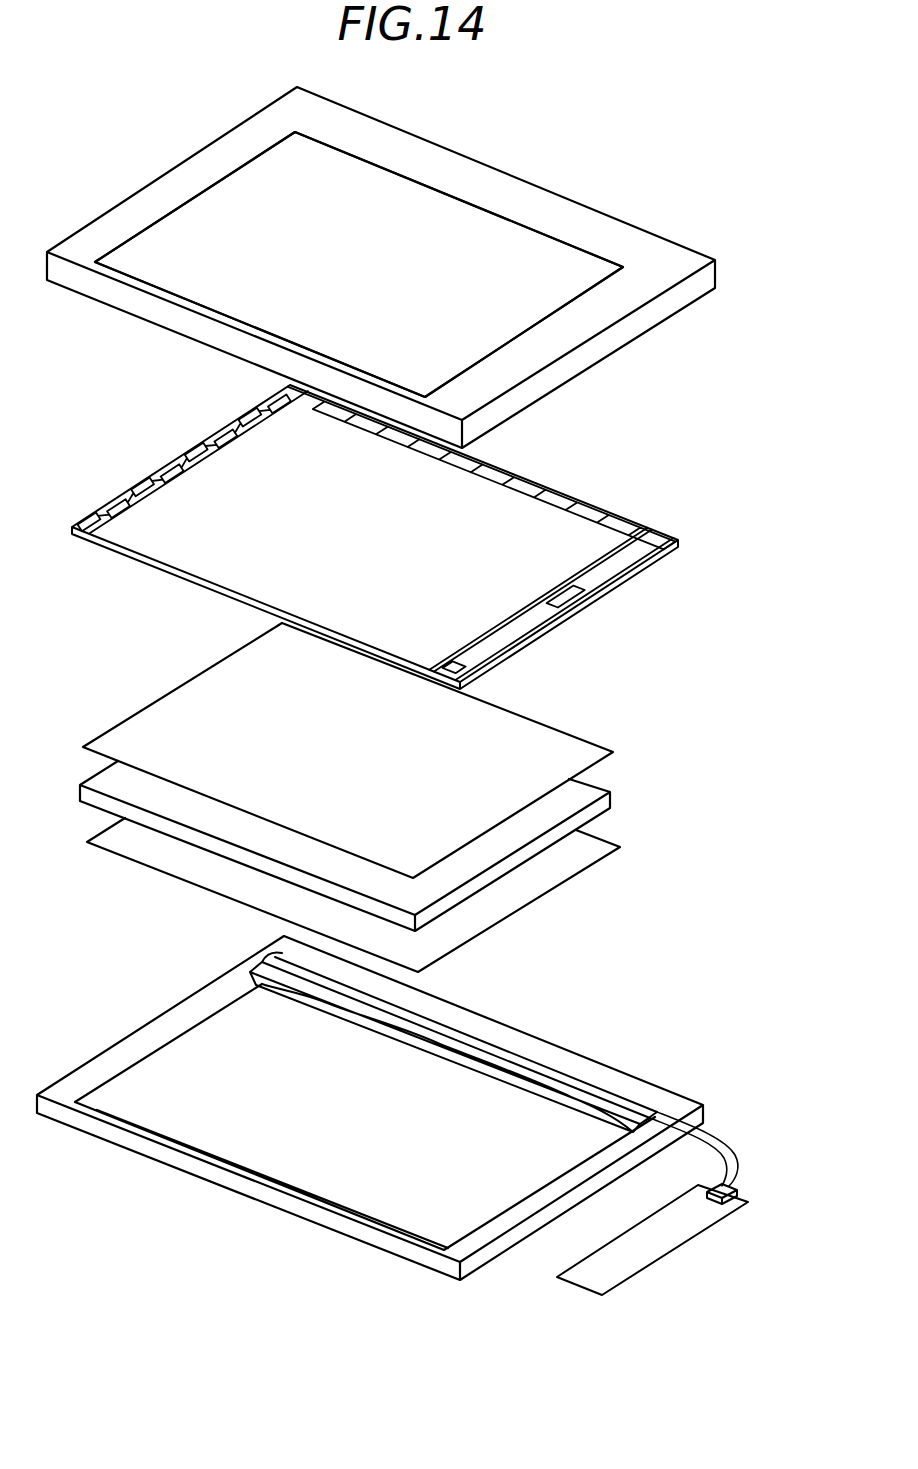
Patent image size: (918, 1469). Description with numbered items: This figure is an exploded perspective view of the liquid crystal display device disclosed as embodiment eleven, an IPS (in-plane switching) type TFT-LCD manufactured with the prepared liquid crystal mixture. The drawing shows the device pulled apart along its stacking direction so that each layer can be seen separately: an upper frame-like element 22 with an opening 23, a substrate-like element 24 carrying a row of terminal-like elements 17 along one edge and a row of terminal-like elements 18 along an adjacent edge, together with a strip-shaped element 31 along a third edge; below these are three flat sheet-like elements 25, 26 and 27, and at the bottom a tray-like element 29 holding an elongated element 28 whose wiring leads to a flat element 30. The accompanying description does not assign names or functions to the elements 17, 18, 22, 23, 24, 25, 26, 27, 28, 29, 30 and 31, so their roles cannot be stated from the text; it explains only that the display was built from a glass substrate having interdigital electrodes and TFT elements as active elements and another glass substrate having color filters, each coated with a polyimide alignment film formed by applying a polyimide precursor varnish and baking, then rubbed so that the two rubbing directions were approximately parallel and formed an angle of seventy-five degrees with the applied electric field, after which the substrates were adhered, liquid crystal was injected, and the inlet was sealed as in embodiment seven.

The first electrode terminals 17 is at (197, 456).
The second electrode terminals 18 is at (593, 503).
The upper frame 22 is at (487, 178).
The opening of frame 23 is at (460, 308).
The touch panel substrate 24 is at (462, 567).
The polarizing plate 25 is at (508, 755).
The liquid crystal panel 26 is at (532, 825).
The light guide plate 27 is at (503, 902).
The backlight lamp 28 is at (473, 1052).
The lower case 29 is at (193, 1012).
The flexible printed circuit 30 is at (672, 1232).
The flexible wiring board 31 is at (633, 562).